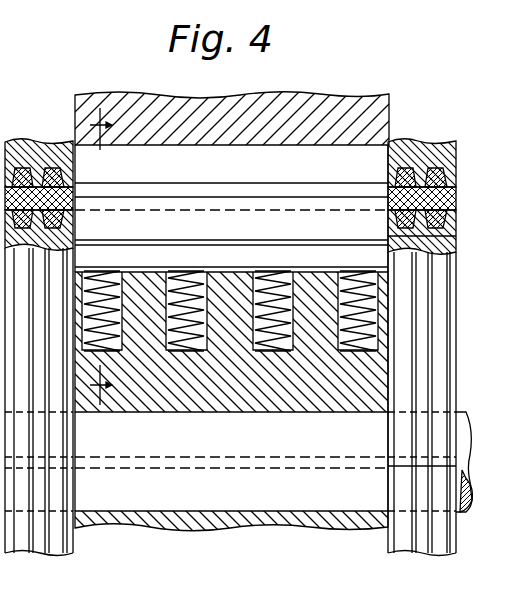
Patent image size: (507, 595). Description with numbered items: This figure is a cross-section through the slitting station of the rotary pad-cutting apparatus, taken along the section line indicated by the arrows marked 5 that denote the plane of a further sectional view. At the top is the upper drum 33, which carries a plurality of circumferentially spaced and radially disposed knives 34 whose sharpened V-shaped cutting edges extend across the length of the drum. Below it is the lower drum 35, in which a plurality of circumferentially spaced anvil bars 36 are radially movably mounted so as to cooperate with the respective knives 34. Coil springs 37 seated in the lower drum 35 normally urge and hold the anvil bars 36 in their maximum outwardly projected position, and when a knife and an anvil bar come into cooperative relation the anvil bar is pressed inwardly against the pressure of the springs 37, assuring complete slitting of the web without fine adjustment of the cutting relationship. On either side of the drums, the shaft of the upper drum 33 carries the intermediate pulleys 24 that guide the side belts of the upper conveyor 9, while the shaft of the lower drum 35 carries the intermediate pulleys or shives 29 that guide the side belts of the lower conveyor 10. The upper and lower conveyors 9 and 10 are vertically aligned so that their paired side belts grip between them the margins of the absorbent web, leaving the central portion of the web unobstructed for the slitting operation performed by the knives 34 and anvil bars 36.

The drum 33 is at (389, 104).
The intermediate pulleys 24 is at (12, 140).
The upper conveyor 9 is at (52, 168).
The intermediate pulleys or shives 29 is at (456, 245).
The knives 34 is at (275, 190).
The anvil bars 36 is at (313, 205).
The drum 35 is at (378, 401).
The coil springs 37 is at (262, 280).
The lower conveyor 10 is at (408, 359).
The section line 5 is at (108, 256).